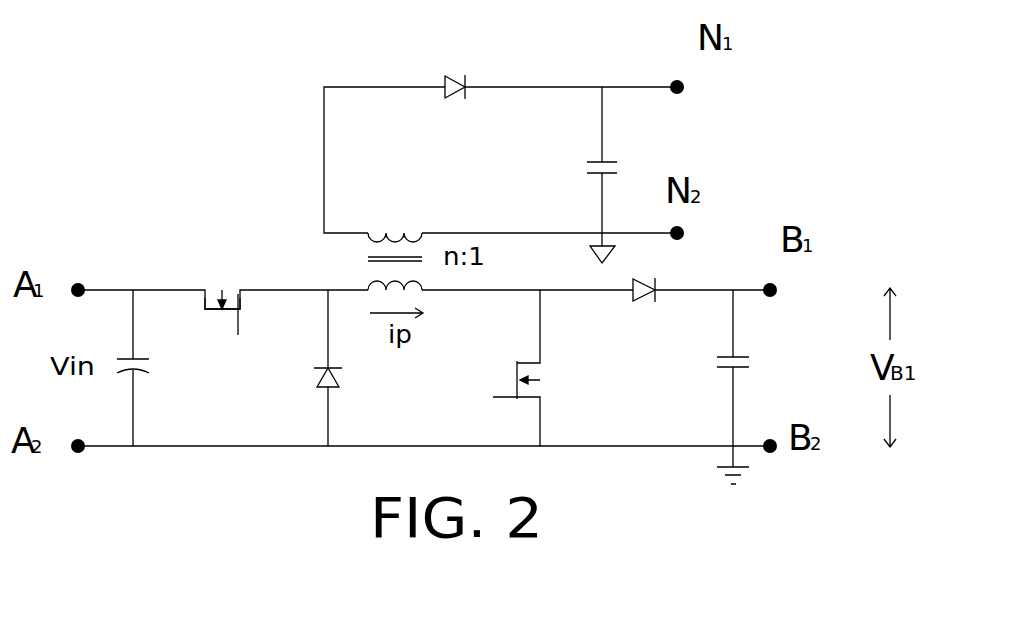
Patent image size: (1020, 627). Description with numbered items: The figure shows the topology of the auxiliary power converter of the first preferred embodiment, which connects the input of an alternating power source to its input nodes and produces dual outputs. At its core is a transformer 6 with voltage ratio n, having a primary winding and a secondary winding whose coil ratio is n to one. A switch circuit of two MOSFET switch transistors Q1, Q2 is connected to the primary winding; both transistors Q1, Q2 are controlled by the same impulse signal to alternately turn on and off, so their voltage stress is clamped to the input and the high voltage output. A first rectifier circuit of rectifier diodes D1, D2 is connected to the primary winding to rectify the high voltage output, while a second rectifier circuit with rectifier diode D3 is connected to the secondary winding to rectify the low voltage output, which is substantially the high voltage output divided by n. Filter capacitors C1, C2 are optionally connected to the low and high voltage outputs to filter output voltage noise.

The transformer 6 is at (335, 261).
The switch transistor Q1 is at (215, 320).
The switch transistor Q2 is at (539, 368).
The rectifier diode D1 is at (344, 368).
The rectifier diode D2 is at (651, 308).
The rectifier diode D3 is at (455, 108).
The capacitor C1 is at (623, 175).
The capacitor C2 is at (753, 387).